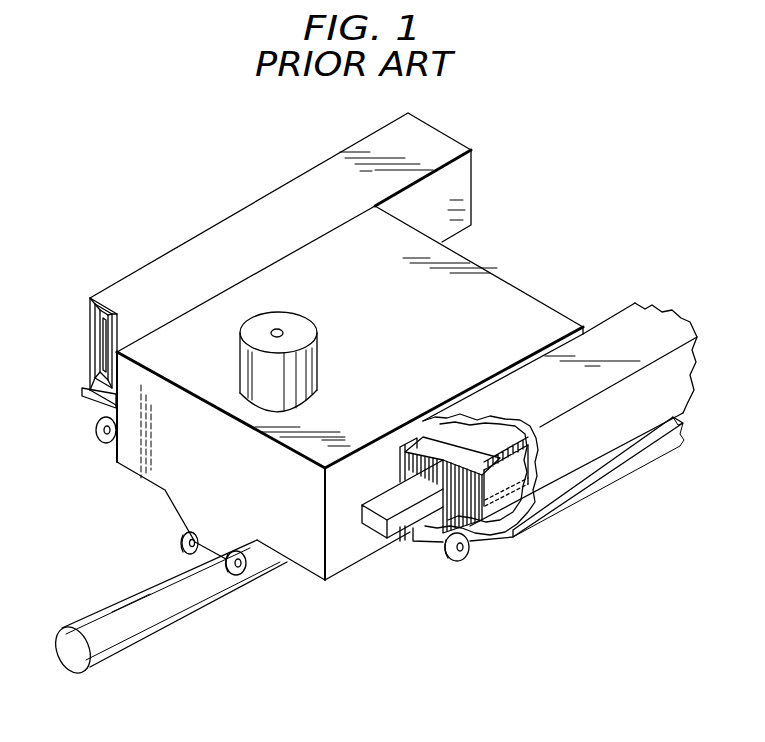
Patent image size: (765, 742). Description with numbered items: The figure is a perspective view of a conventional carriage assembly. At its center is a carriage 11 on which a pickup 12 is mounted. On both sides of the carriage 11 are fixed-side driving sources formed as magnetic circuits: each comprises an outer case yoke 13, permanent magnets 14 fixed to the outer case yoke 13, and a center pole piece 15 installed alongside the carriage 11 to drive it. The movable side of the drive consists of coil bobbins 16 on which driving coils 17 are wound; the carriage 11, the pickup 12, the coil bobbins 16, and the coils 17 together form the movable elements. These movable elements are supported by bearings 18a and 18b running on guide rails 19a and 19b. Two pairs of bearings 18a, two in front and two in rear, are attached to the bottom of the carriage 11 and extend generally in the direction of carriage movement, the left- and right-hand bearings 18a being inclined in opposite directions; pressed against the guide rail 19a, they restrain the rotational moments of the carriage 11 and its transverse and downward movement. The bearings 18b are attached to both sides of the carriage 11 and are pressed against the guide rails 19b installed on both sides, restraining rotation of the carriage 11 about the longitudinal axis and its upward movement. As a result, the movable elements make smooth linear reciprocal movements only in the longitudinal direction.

The carriage 11 is at (529, 300).
The pickup 12 is at (318, 362).
The outer case yokes 13 is at (452, 135).
The permanent magnets 14 is at (118, 320).
The center pole pieces 15 is at (98, 361).
The coil bobbins 16 is at (105, 342).
The driving coils 17 is at (137, 330).
The bearings 18a is at (182, 543).
The bearings 18b is at (100, 423).
The guide rail 19a is at (222, 587).
The guide rails 19b is at (83, 393).